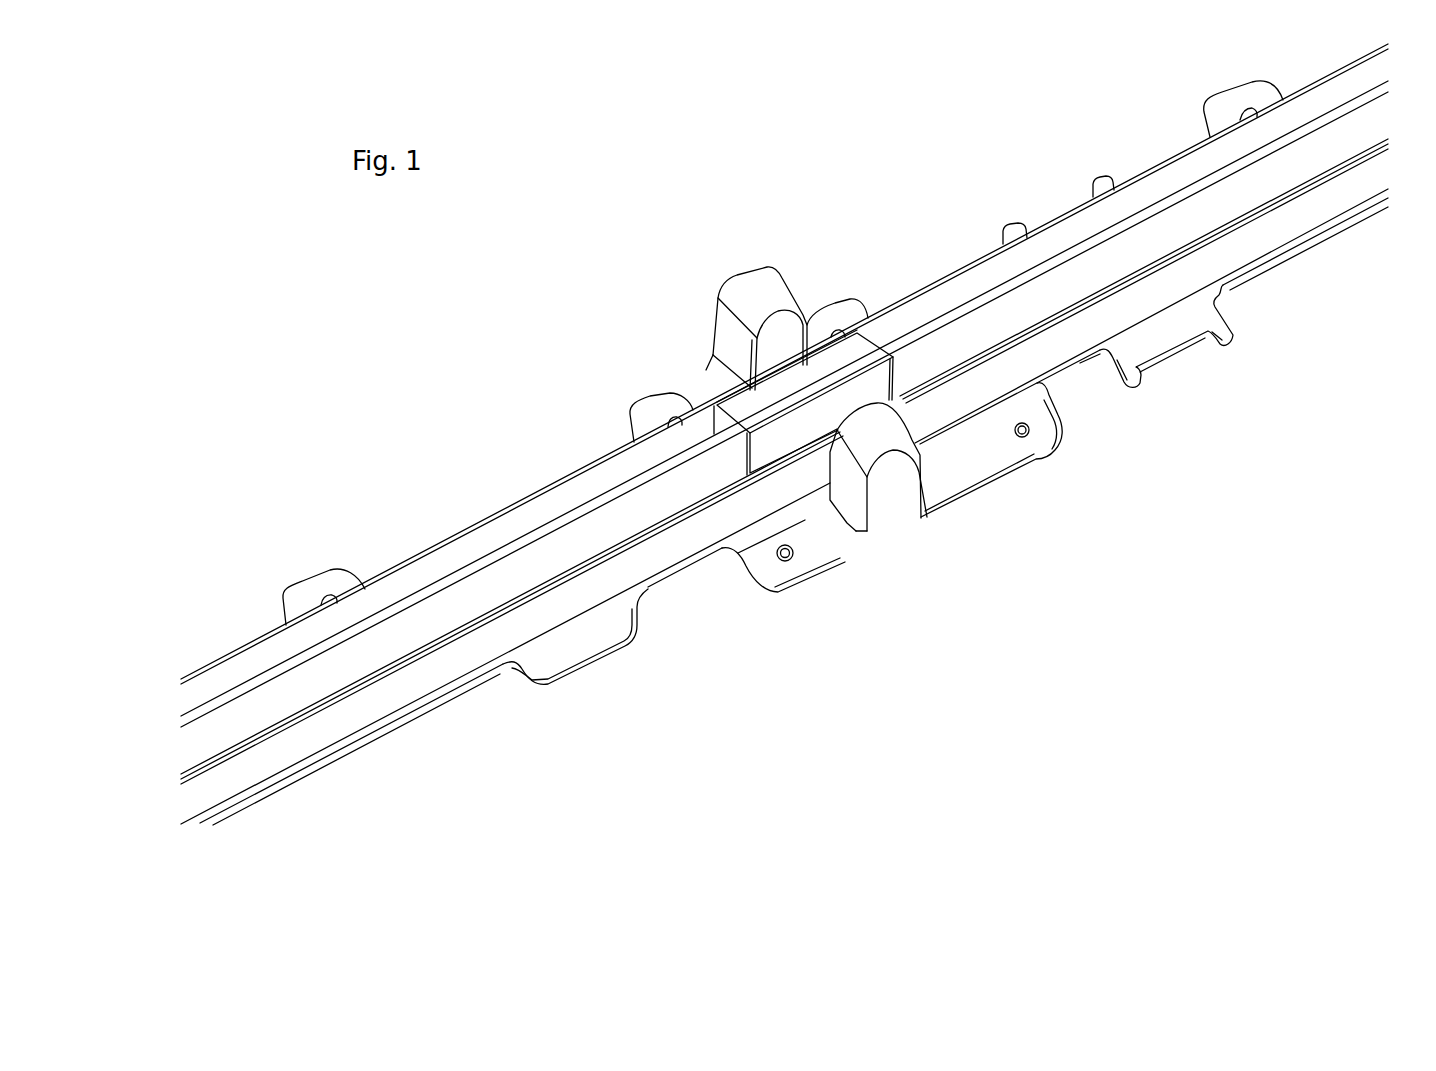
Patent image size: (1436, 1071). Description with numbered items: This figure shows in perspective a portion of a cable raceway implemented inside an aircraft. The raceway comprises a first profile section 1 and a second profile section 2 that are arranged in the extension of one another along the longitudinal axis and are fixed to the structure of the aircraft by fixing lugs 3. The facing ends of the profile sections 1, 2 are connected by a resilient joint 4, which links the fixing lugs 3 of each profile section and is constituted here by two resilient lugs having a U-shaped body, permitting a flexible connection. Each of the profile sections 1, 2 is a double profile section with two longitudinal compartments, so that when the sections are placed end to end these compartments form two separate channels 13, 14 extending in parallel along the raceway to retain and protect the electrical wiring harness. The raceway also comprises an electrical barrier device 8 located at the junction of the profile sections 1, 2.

The first profile section 1 is at (488, 517).
The second profile section 2 is at (1161, 161).
The fixing lugs 3 is at (1243, 103).
The resilient joint 4 is at (757, 283).
The electrical barrier device 8 is at (877, 376).
The channel 13 is at (442, 620).
The channel 14 is at (500, 535).